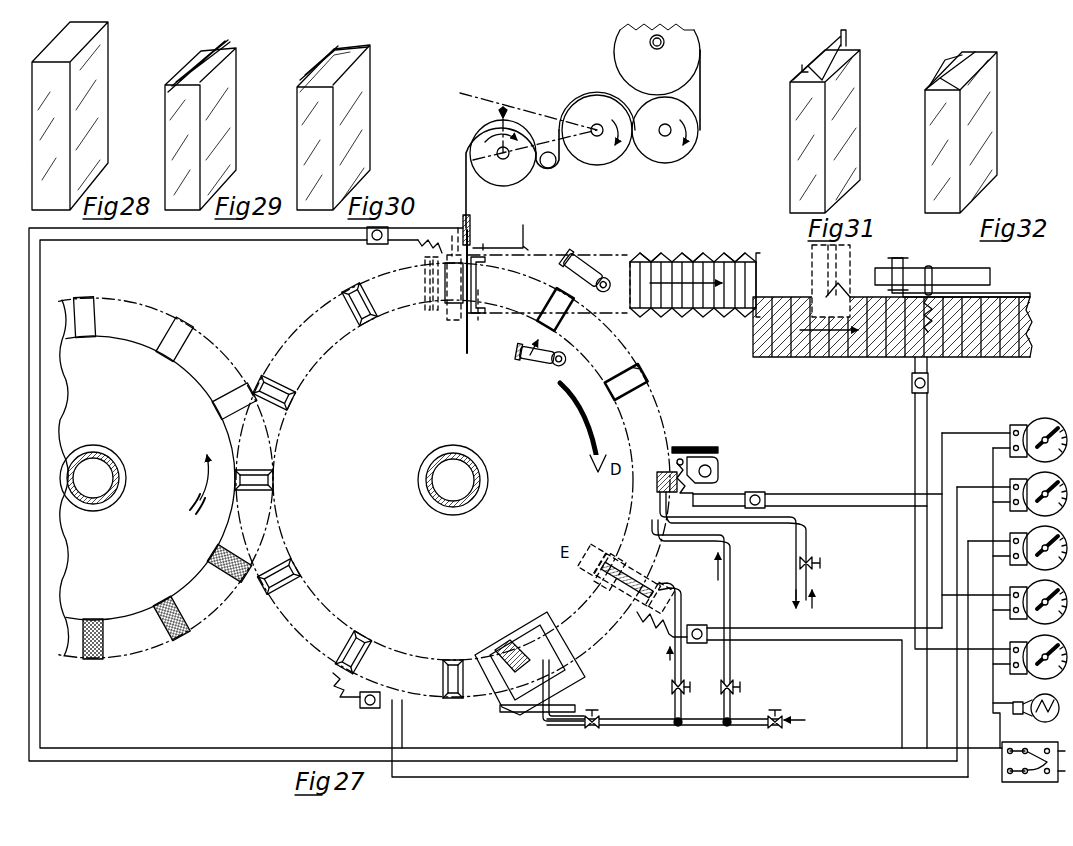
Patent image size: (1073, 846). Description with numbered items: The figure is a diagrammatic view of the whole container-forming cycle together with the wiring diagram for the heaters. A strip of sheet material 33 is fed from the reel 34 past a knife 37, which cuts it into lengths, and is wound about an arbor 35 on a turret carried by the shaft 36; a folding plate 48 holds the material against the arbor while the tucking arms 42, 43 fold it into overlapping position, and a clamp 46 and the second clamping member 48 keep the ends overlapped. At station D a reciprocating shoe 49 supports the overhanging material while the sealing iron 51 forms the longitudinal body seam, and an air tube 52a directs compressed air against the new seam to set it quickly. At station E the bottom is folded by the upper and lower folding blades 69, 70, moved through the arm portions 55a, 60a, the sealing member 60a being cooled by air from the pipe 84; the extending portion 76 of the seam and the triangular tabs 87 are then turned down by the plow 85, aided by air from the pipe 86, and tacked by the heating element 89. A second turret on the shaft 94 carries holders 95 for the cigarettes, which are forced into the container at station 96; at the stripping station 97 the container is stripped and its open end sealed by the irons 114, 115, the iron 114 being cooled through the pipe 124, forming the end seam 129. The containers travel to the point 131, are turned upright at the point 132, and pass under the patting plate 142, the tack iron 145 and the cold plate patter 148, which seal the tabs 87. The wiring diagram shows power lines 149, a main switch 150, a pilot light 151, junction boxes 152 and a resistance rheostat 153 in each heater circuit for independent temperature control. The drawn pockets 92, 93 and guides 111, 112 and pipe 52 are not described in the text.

In FIG. 28, the strip of sheet material 33 is at (100, 110).
In FIG. 27, the strip of sheet material 33 is at (702, 94).
In FIG. 27, the reel 34 is at (685, 55).
In FIG. 27, the arbor 35 is at (445, 300).
In FIG. 27, the shaft 36 is at (470, 468).
In FIG. 27, the knife 37 is at (482, 230).
In FIG. 27, the tucking arm 42 is at (517, 352).
In FIG. 27, the tucking arm 43 is at (558, 283).
In FIG. 27, the clamp 46 is at (628, 364).
In FIG. 27, the folding plate 48 is at (490, 283).
In FIG. 27, the reciprocating shoe 49 is at (657, 486).
In FIG. 27, the sealing iron 51 is at (665, 462).
In FIG. 27, the supply pipe 52 is at (806, 535).
In FIG. 27, the air tube 52a is at (732, 580).
In FIG. 27, the arm portion 55a is at (636, 609).
In FIG. 27, the sealing member 60a is at (662, 568).
In FIG. 27, the upper folding blade 69 is at (600, 583).
In FIG. 27, the lower folding blade 70 is at (610, 553).
In FIG. 27, the extending portion of seam 76 is at (752, 288).
In FIG. 27, the pipe 84 is at (681, 615).
In FIG. 27, the plow 85 is at (508, 640).
In FIG. 27, the pipe 86 is at (575, 700).
In FIG. 30, the triangular tabs 87 is at (312, 95).
In FIG. 31, the triangular tabs 87 is at (850, 42).
In FIG. 32, the triangular tabs 87 is at (975, 55).
In FIG. 27, the triangular tabs 87 is at (555, 668).
In FIG. 27, the heating element 89 is at (368, 633).
In FIG. 27, the pocket 92 is at (464, 655).
In FIG. 27, the pocket 93 is at (385, 624).
In FIG. 27, the shaft 94 is at (110, 468).
In FIG. 27, the holders 95 is at (183, 325).
In FIG. 27, the filling station 96 is at (305, 486).
In FIG. 27, the stripping station 97 is at (464, 344).
In FIG. 27, the web guide 111 is at (450, 238).
In FIG. 27, the web guide 112 is at (457, 222).
In FIG. 27, the iron 114 is at (481, 316).
In FIG. 27, the iron 115 is at (424, 294).
In FIG. 27, the pipe 124 is at (530, 238).
In FIG. 29, the end seam 129 is at (222, 40).
In FIG. 30, the end seam 129 is at (347, 43).
In FIG. 27, the end seam 129 is at (742, 262).
In FIG. 27, the point 131 is at (758, 276).
In FIG. 27, the point 132 is at (753, 345).
In FIG. 27, the patting plate 142 is at (893, 268).
In FIG. 27, the tack iron 145 is at (935, 268).
In FIG. 27, the cold plate patter 148 is at (992, 292).
In FIG. 27, the power lines 149 is at (1038, 778).
In FIG. 27, the main switch 150 is at (1017, 782).
In FIG. 27, the pilot light 151 is at (1045, 720).
In FIG. 27, the junction boxes 152 is at (377, 245).
In FIG. 27, the resistance rheostat 153 is at (1030, 425).